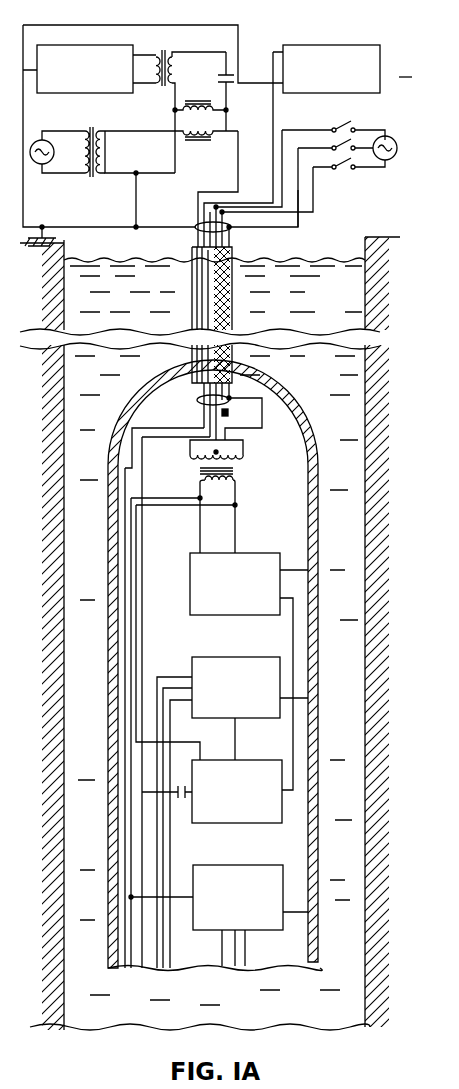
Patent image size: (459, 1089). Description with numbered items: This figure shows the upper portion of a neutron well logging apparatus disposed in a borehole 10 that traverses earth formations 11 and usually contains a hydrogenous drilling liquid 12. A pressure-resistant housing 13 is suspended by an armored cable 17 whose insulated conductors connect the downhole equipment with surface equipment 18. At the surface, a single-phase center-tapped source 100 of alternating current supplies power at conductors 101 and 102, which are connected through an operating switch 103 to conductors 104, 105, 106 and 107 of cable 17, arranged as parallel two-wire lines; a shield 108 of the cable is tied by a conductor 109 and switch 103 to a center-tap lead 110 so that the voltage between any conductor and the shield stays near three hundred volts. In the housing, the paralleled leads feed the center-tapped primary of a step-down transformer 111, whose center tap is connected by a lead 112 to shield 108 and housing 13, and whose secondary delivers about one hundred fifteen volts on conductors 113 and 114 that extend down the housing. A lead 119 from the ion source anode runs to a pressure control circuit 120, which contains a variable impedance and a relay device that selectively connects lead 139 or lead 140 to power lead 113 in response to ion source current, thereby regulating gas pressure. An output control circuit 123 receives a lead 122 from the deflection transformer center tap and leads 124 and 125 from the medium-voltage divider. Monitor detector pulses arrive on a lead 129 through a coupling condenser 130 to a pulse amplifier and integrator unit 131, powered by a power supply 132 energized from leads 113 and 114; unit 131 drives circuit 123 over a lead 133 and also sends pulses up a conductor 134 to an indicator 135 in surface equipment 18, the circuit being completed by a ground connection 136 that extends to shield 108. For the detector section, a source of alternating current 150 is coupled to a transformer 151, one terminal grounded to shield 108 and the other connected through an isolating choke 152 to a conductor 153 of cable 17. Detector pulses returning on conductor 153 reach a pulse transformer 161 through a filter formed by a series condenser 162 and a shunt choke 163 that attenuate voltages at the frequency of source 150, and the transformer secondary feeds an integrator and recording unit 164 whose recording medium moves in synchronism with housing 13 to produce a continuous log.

The borehole 10 is at (362, 246).
The earth formations 11 is at (372, 420).
The hydrogenous drilling liquid 12 is at (295, 259).
The pressure-resistant housing 13 is at (318, 560).
The armored cable 17 is at (182, 257).
The surface equipment 18 is at (405, 70).
The single-phase center-tapped source 100 is at (397, 146).
The conductor 101 is at (359, 131).
The conductor 102 is at (374, 169).
The operating switch 103 is at (344, 121).
The conductor 104 is at (210, 205).
The conductor 105 is at (204, 213).
The conductor 106 is at (231, 224).
The conductor 107 is at (229, 234).
The shield 108 is at (196, 225).
The conductor 109 is at (300, 225).
The center-tap lead 110 is at (380, 132).
The step-down transformer 111 is at (198, 470).
The lead 112 is at (262, 418).
The conductor 113 is at (190, 497).
The conductor 114 is at (190, 506).
The lead 119 is at (246, 958).
The pressure control circuit 120 is at (242, 865).
The lead 122 is at (156, 863).
The output control circuit 123 is at (222, 657).
The lead 124 is at (169, 877).
The lead 125 is at (164, 847).
The lead 129 is at (141, 928).
The coupling condenser 130 is at (182, 802).
The pulse amplifier and integrator unit 131 is at (248, 760).
The power supply 132 is at (242, 553).
The lead 133 is at (235, 752).
The conductor 134 is at (276, 99).
The indicator 135 is at (360, 45).
The ground connection 136 is at (50, 226).
The lead 139 is at (236, 940).
The lead 140 is at (222, 938).
The source of alternating current 150 is at (38, 164).
The transformer 151 is at (96, 175).
The isolating choke 152 is at (200, 140).
The conductor 153 is at (238, 188).
The pulse transformer 161 is at (165, 52).
The series condenser 162 is at (218, 77).
The shunt choke 163 is at (203, 105).
The integrator and recording unit 164 is at (68, 93).